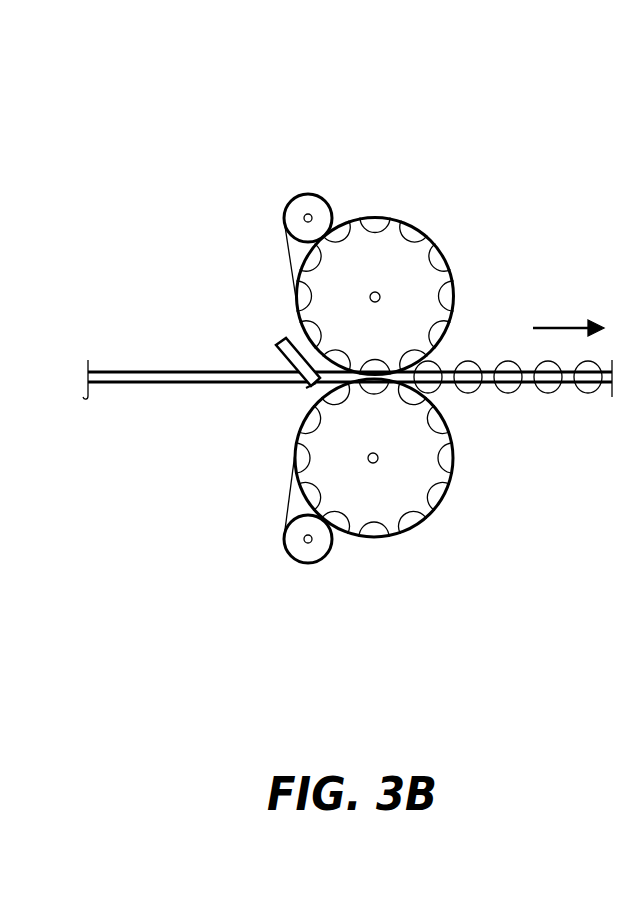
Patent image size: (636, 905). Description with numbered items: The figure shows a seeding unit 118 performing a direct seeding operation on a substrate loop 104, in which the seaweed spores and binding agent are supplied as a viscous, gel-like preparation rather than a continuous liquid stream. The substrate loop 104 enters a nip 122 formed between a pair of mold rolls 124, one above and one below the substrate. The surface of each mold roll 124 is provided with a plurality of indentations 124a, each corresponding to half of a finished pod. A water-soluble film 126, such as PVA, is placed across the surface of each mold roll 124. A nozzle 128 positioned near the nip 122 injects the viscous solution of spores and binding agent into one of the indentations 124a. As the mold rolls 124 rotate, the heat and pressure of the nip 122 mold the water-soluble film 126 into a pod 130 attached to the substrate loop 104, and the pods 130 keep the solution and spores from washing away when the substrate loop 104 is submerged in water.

The substrate loop 104 is at (148, 371).
The seeding unit 118 is at (537, 137).
The nip 122 is at (293, 335).
The mold roll 124 is at (397, 335).
The indentations 124a is at (416, 240).
The water-soluble film 126 is at (291, 252).
The nozzle 128 is at (306, 386).
The pod 130 is at (523, 410).